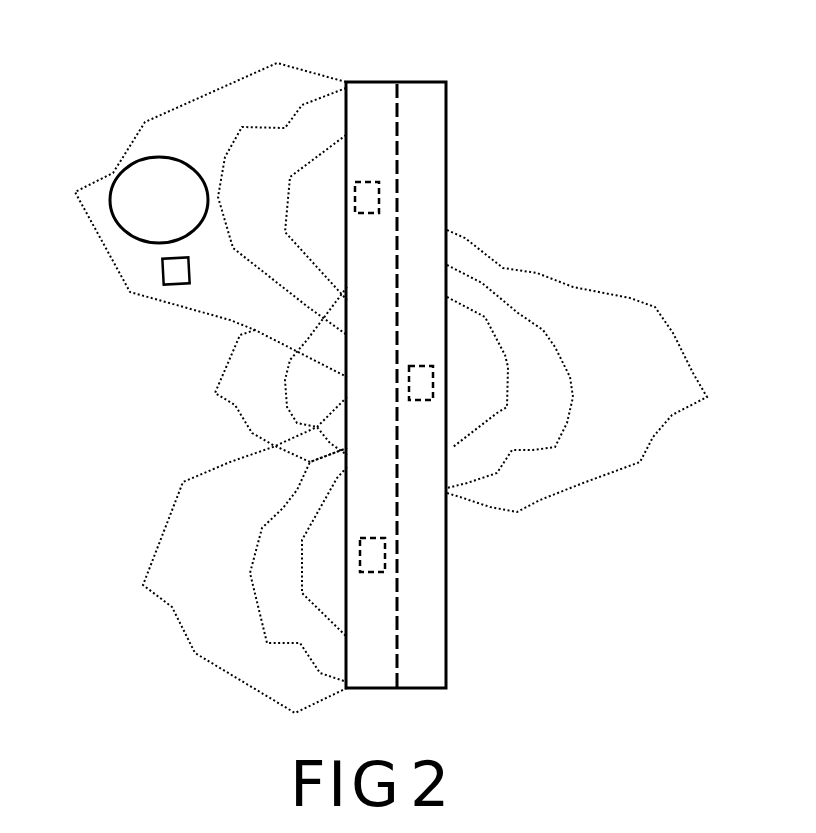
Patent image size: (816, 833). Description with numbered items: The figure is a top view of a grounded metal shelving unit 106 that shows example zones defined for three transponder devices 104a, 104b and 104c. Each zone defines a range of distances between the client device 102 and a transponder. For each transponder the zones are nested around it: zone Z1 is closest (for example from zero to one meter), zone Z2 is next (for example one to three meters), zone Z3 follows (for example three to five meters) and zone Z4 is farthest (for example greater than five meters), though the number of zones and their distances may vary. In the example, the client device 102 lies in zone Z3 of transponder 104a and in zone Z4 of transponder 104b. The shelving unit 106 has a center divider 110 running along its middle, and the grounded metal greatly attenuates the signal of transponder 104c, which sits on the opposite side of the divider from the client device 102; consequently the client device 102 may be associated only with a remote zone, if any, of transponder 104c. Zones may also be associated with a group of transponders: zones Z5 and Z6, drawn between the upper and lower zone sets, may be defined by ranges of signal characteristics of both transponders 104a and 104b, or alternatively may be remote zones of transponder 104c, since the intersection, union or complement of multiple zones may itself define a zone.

The client device 102 is at (163, 283).
The transponder device 104a is at (378, 182).
The transponder device 104b is at (385, 558).
The transponder device 104c is at (430, 368).
The grounded metal shelving unit 106 is at (446, 82).
The center divider 110 is at (394, 88).
The zone Z1 is at (401, 415).
The zone Z2 is at (401, 408).
The zone Z3 is at (439, 333).
The zone Z4 is at (391, 388).
The zone Z5 is at (316, 371).
The zone Z6 is at (281, 396).